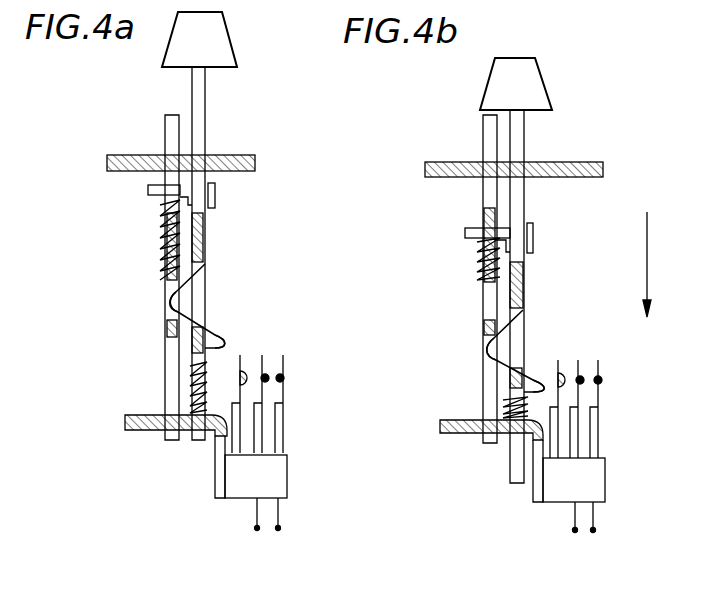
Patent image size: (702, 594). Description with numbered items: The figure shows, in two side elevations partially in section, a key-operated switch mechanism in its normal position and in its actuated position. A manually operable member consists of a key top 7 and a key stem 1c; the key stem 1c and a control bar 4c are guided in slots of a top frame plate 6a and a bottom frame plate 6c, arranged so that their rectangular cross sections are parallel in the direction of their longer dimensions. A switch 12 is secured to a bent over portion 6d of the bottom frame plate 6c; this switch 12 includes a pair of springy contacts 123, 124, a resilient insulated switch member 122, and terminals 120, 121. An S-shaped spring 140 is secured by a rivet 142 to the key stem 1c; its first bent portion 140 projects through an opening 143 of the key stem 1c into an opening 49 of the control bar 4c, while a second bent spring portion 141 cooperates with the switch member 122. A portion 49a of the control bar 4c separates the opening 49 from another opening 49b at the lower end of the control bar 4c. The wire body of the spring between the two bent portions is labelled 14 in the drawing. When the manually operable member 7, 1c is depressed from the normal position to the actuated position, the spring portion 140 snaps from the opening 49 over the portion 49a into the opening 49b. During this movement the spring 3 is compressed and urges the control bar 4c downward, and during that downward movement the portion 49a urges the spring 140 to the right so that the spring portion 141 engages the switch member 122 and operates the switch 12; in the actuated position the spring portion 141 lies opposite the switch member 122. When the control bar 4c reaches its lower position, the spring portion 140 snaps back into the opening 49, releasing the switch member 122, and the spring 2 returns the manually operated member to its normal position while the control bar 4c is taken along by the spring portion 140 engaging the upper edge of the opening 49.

In FIG. 4a, the manually operable member 7 is at (222, 33).
In FIG. 4b, the manually operable member 7 is at (535, 80).
In FIG. 4a, the key stem 1c is at (200, 112).
In FIG. 4b, the key stem 1c is at (517, 200).
In FIG. 4a, the control bar 4c is at (168, 127).
In FIG. 4b, the control bar 4c is at (483, 133).
In FIG. 4a, the top frame plate 6a is at (240, 157).
In FIG. 4b, the top frame plate 6a is at (585, 162).
In FIG. 4a, the rivet 142 is at (215, 196).
In FIG. 4b, the rivet 142 is at (533, 240).
In FIG. 4a, the spring 3 is at (162, 240).
In FIG. 4a, the opening 49 is at (170, 291).
In FIG. 4b, the opening 49 is at (487, 298).
In FIG. 4a, the opening 143 is at (200, 290).
In FIG. 4b, the opening 143 is at (525, 330).
In FIG. 4a, the wire 14 is at (205, 315).
In FIG. 4b, the wire 14 is at (525, 360).
In FIG. 4a, the S-shaped spring 140 is at (175, 310).
In FIG. 4b, the S-shaped spring 140 is at (490, 345).
In FIG. 4a, the second bent spring portion 141 is at (228, 340).
In FIG. 4b, the second bent spring portion 141 is at (548, 385).
In FIG. 4a, the portion of control bar 49a is at (168, 336).
In FIG. 4b, the portion of control bar 49a is at (488, 328).
In FIG. 4a, the opening 49b is at (166, 372).
In FIG. 4a, the spring 2 is at (190, 395).
In FIG. 4b, the spring 2 is at (515, 393).
In FIG. 4a, the bottom frame plate 6c is at (130, 430).
In FIG. 4b, the bottom frame plate 6c is at (455, 422).
In FIG. 4a, the bent over portion 6d is at (215, 478).
In FIG. 4b, the bent over portion 6d is at (538, 471).
In FIG. 4a, the switch 12 is at (285, 472).
In FIG. 4b, the switch 12 is at (574, 495).
In FIG. 4a, the switch member 122 is at (250, 372).
In FIG. 4b, the switch member 122 is at (576, 409).
In FIG. 4a, the springy contact 124 is at (283, 378).
In FIG. 4a, the springy contact 123 is at (266, 381).
In FIG. 4a, the terminal 120 is at (257, 528).
In FIG. 4a, the terminal 121 is at (278, 528).